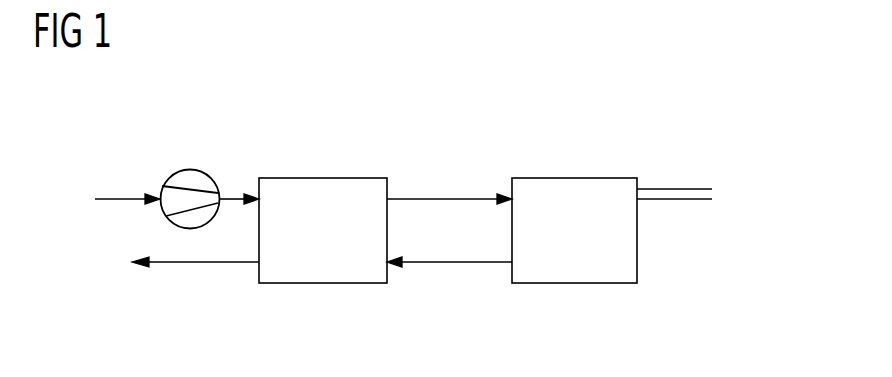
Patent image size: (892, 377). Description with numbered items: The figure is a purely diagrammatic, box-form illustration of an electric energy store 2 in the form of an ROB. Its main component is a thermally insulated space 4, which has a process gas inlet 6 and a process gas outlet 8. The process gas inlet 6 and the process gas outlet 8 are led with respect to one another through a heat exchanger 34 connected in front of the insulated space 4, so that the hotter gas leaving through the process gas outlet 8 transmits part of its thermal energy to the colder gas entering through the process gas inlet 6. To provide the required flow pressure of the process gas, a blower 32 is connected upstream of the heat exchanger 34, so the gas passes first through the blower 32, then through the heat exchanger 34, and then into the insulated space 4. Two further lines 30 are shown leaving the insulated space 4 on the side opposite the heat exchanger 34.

The electric energy store 2 is at (388, 109).
The thermally insulated space 4 is at (570, 283).
The process gas inlet 6 is at (127, 197).
The process gas outlet 8 is at (213, 263).
The output lines 30 is at (673, 188).
The blower 32 is at (190, 171).
The heat exchanger 34 is at (317, 283).